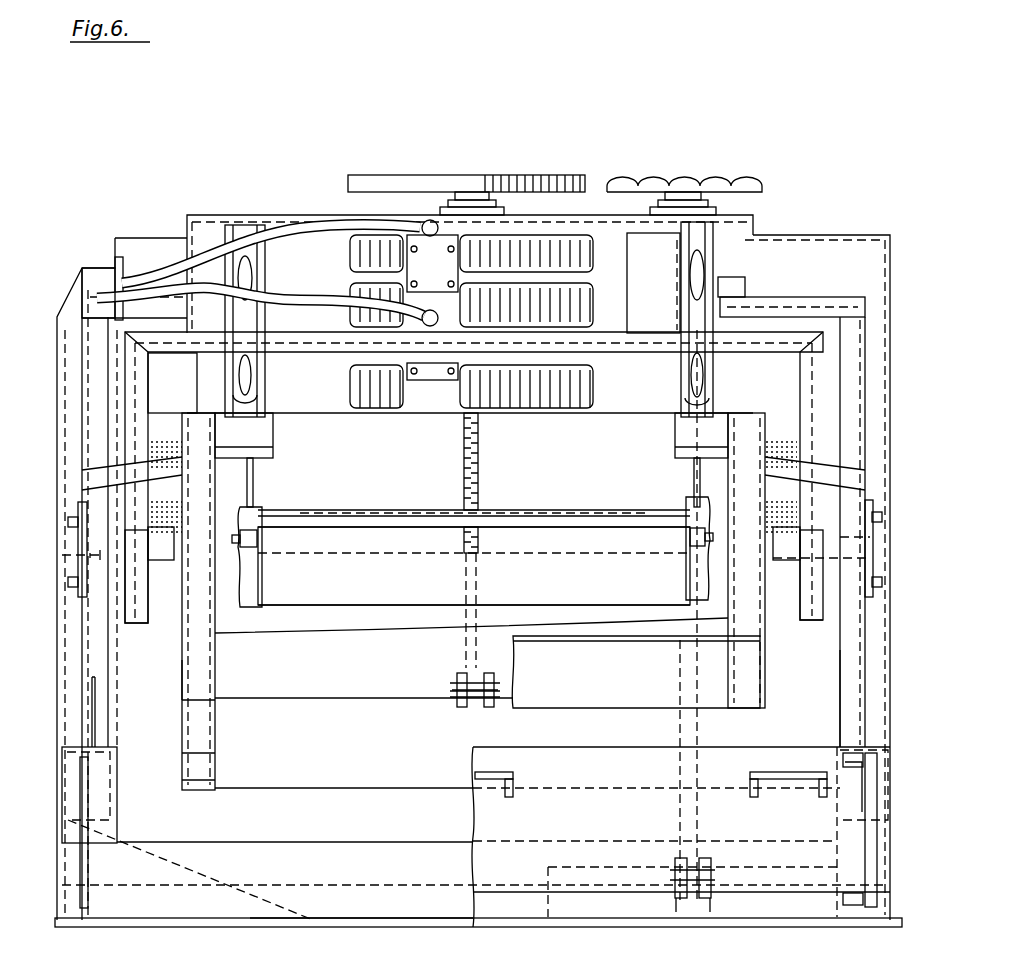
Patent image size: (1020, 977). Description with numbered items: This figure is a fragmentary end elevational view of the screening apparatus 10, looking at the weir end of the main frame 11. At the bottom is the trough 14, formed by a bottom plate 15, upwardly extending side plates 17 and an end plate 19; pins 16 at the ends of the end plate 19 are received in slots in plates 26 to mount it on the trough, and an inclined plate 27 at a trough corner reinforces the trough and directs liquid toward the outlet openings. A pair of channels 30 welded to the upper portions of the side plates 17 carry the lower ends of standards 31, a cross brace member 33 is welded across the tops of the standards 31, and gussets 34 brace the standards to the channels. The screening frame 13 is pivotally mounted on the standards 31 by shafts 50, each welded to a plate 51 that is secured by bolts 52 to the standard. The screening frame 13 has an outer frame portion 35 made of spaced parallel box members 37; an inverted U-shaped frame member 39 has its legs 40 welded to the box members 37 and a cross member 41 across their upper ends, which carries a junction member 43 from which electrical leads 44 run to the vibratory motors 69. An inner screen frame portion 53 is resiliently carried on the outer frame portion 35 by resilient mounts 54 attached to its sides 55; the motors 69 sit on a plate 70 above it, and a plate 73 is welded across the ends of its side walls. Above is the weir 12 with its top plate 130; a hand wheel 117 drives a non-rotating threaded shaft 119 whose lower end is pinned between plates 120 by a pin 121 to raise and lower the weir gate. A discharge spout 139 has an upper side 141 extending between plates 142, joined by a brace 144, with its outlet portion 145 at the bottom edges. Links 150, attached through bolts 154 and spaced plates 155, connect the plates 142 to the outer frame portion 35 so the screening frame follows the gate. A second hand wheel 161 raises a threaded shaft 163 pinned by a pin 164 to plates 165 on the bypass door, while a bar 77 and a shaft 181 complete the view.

The apparatus 10 is at (716, 100).
The main frame 11 is at (816, 908).
The weir 12 is at (130, 238).
The screening frame 13 is at (57, 650).
The trough 14 is at (334, 920).
The bottom plate 15 is at (378, 930).
The pins 16 is at (880, 760).
The side plates 17 is at (62, 868).
The end plate 19 is at (604, 819).
The plates 26 is at (80, 858).
The inclined plate 27 is at (185, 870).
The channels 30 is at (118, 812).
The standards 31 is at (82, 622).
The cross brace member 33 is at (789, 297).
The gussets 34 is at (95, 720).
The outer frame portion 35 is at (84, 470).
The box members 37 is at (150, 628).
The inverted U-shaped frame member 39 is at (148, 376).
The legs 40 is at (148, 396).
The cross member 41 is at (338, 414).
The junction member 43 is at (84, 268).
The electrical leads 44 is at (302, 210).
The shafts 50 is at (64, 558).
The plate 51 is at (78, 597).
The bolts 52 is at (68, 522).
The inner screen frame portion 53 is at (182, 677).
The resilient mounts 54 is at (158, 453).
The sides 55 is at (182, 603).
The vibratory motors 69 is at (618, 256).
The plate 70 is at (734, 280).
The plate 73 is at (586, 708).
The bar 77 is at (358, 790).
The hand wheel 117 is at (410, 175).
The threaded shaft 119 is at (478, 434).
The plates 120 is at (460, 676).
The pin 121 is at (455, 683).
The top plate 130 is at (755, 215).
The discharge spout 139 is at (576, 551).
The upper side 141 is at (422, 586).
The plates 142 is at (236, 628).
The brace 144 is at (566, 510).
The outlet portion 145 is at (570, 606).
The links 150 is at (258, 470).
The bolts 154 is at (248, 510).
The plates 155 is at (260, 590).
The hand wheel 161 is at (728, 180).
The threaded shaft 163 is at (678, 458).
The pin 164 is at (688, 898).
The plates 165 is at (675, 898).
The shaft 181 is at (700, 653).